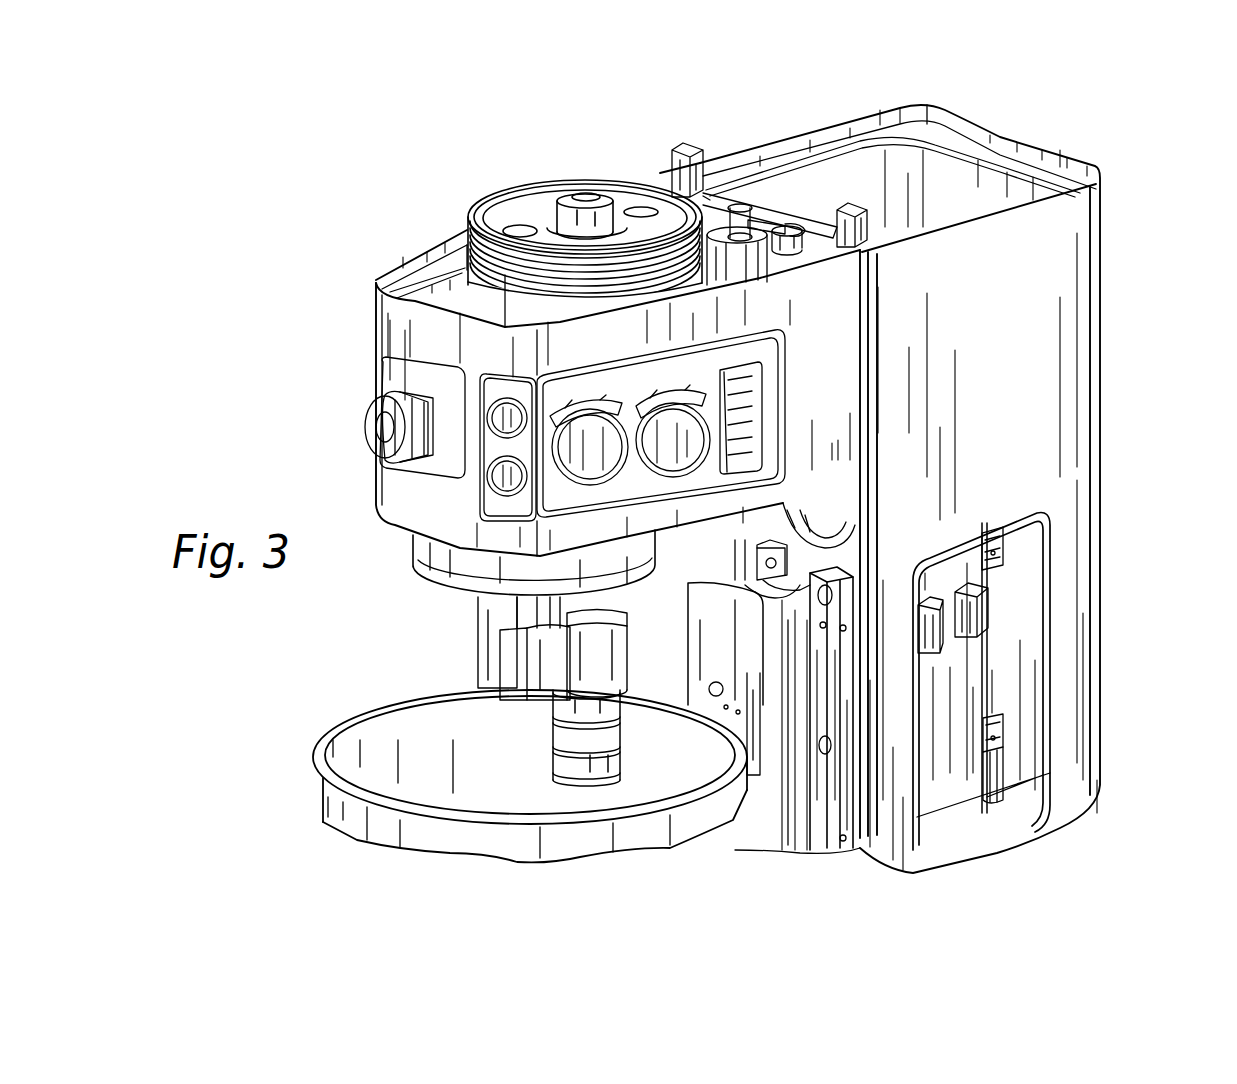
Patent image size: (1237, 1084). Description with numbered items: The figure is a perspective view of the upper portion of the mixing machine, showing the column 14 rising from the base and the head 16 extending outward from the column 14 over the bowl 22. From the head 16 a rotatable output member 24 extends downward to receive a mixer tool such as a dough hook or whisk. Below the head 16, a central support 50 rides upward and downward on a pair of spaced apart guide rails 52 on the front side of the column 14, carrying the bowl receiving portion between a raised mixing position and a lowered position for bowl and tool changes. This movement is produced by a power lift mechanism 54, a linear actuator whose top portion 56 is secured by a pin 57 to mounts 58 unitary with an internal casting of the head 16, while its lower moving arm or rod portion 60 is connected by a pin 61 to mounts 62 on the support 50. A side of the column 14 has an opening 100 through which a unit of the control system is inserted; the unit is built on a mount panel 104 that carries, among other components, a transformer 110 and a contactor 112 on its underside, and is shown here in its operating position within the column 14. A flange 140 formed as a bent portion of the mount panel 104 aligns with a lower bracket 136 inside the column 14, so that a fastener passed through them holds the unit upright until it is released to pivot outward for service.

The column 14 is at (1022, 385).
The head 16 is at (398, 278).
The bowl 22 is at (382, 707).
The rotatable output member 24 is at (562, 736).
The central support 50 is at (793, 583).
The guide rails 52 is at (827, 773).
The power lift mechanism 54 is at (768, 196).
The top portion 56 is at (738, 210).
The pin 57 is at (800, 222).
The mounts 58 is at (798, 228).
The moving arm or rod portion 60 is at (712, 560).
The pin 61 is at (790, 560).
The mounts 62 is at (812, 502).
The opening 100 is at (1052, 600).
The mount panel 104 is at (960, 567).
The transformer 110 is at (940, 653).
The contactor 112 is at (985, 614).
The bracket 136 is at (1005, 775).
The flange 140 is at (1005, 740).